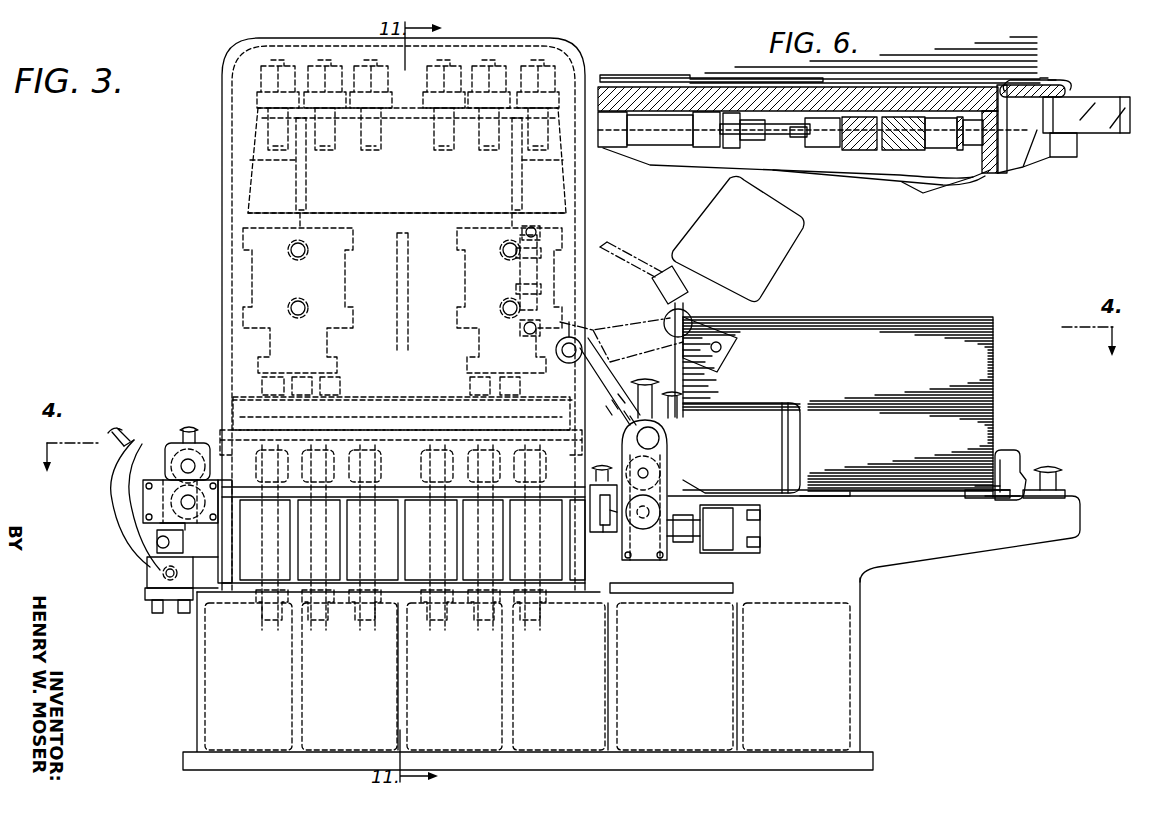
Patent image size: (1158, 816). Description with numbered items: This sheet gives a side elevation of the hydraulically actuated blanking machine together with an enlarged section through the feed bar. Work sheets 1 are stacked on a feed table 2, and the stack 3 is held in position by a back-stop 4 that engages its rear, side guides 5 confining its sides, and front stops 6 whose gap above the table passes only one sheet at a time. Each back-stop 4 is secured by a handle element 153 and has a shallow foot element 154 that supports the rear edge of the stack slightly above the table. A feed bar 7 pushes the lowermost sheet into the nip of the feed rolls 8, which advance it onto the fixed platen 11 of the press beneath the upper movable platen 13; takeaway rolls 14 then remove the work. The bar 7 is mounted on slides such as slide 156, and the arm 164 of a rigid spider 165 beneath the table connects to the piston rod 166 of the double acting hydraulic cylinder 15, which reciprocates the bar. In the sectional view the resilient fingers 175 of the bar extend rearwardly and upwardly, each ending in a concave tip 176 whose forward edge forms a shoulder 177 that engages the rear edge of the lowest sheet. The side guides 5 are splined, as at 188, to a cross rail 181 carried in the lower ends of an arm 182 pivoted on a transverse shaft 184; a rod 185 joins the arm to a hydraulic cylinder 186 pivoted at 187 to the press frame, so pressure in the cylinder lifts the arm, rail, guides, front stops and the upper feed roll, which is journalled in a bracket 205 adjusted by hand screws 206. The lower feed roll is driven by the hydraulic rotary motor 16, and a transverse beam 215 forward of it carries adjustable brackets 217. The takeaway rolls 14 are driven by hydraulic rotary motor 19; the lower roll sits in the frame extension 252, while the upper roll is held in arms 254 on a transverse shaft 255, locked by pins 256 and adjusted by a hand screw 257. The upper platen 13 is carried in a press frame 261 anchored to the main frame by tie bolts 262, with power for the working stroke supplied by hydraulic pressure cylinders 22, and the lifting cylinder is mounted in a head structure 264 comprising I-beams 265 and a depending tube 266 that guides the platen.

In FIG. 3, the work sheets 1 is at (872, 498).
In FIG. 6, the work sheets 1 is at (702, 80).
In FIG. 3, the feed table 2 is at (984, 548).
In FIG. 6, the feed table 2 is at (984, 180).
In FIG. 3, the stack 3 is at (846, 381).
In FIG. 6, the stack 3 is at (995, 57).
In FIG. 3, the back-stop 4 is at (1006, 452).
In FIG. 3, the side guides 5 is at (796, 245).
In FIG. 3, the front stops 6 is at (606, 246).
In FIG. 3, the feed bar 7 is at (992, 504).
In FIG. 6, the feed bar 7 is at (1033, 95).
In FIG. 3, the feed rolls 8 is at (622, 445).
In FIG. 3, the fixed platen 11 is at (388, 572).
In FIG. 3, the upper movable platen 13 is at (235, 400).
In FIG. 3, the takeaway rolls 14 is at (178, 447).
In FIG. 6, the double acting hydraulic cylinder 15 is at (618, 140).
In FIG. 3, the hydraulic rotary motor 16 is at (727, 540).
In FIG. 3, the hydraulic rotary motor 19 is at (145, 598).
In FIG. 3, the hydraulic pressure cylinders 22 is at (248, 270).
In FIG. 3, the handle elements 153 is at (1052, 470).
In FIG. 3, the foot element 154 is at (985, 505).
In FIG. 6, the slide 156 is at (1098, 125).
In FIG. 6, the arm 164 is at (1045, 160).
In FIG. 6, the spider 165 is at (915, 147).
In FIG. 6, the piston rod 166 is at (778, 135).
In FIG. 6, the resilient fingers 175 is at (1036, 78).
In FIG. 6, the concave tip 176 is at (1066, 85).
In FIG. 6, the shoulder 177 is at (1050, 80).
In FIG. 3, the cross rail 181 is at (655, 460).
In FIG. 3, the arm 182 is at (620, 404).
In FIG. 3, the transverse shaft 184 is at (612, 309).
In FIG. 3, the rod 185 is at (526, 332).
In FIG. 3, the hydraulic cylinder 186 is at (520, 272).
In FIG. 3, the pivot 187 is at (532, 226).
In FIG. 3, the spline 188 is at (660, 436).
In FIG. 3, the brackets 205 is at (668, 473).
In FIG. 3, the hand screws 206 is at (648, 380).
In FIG. 3, the transverse beam 215 is at (605, 530).
In FIG. 3, the brackets 217 is at (604, 491).
In FIG. 3, the frame extension 252 is at (212, 577).
In FIG. 3, the arms 254 is at (122, 488).
In FIG. 3, the transverse shaft 255 is at (157, 544).
In FIG. 3, the pin 256 is at (147, 573).
In FIG. 3, the hand screw 257 is at (190, 425).
In FIG. 3, the press frame 261 is at (427, 203).
In FIG. 3, the tie bolts 262 is at (326, 61).
In FIG. 3, the head structure 264 is at (250, 157).
In FIG. 3, the I-beams 265 is at (307, 166).
In FIG. 3, the depending tube 266 is at (382, 363).